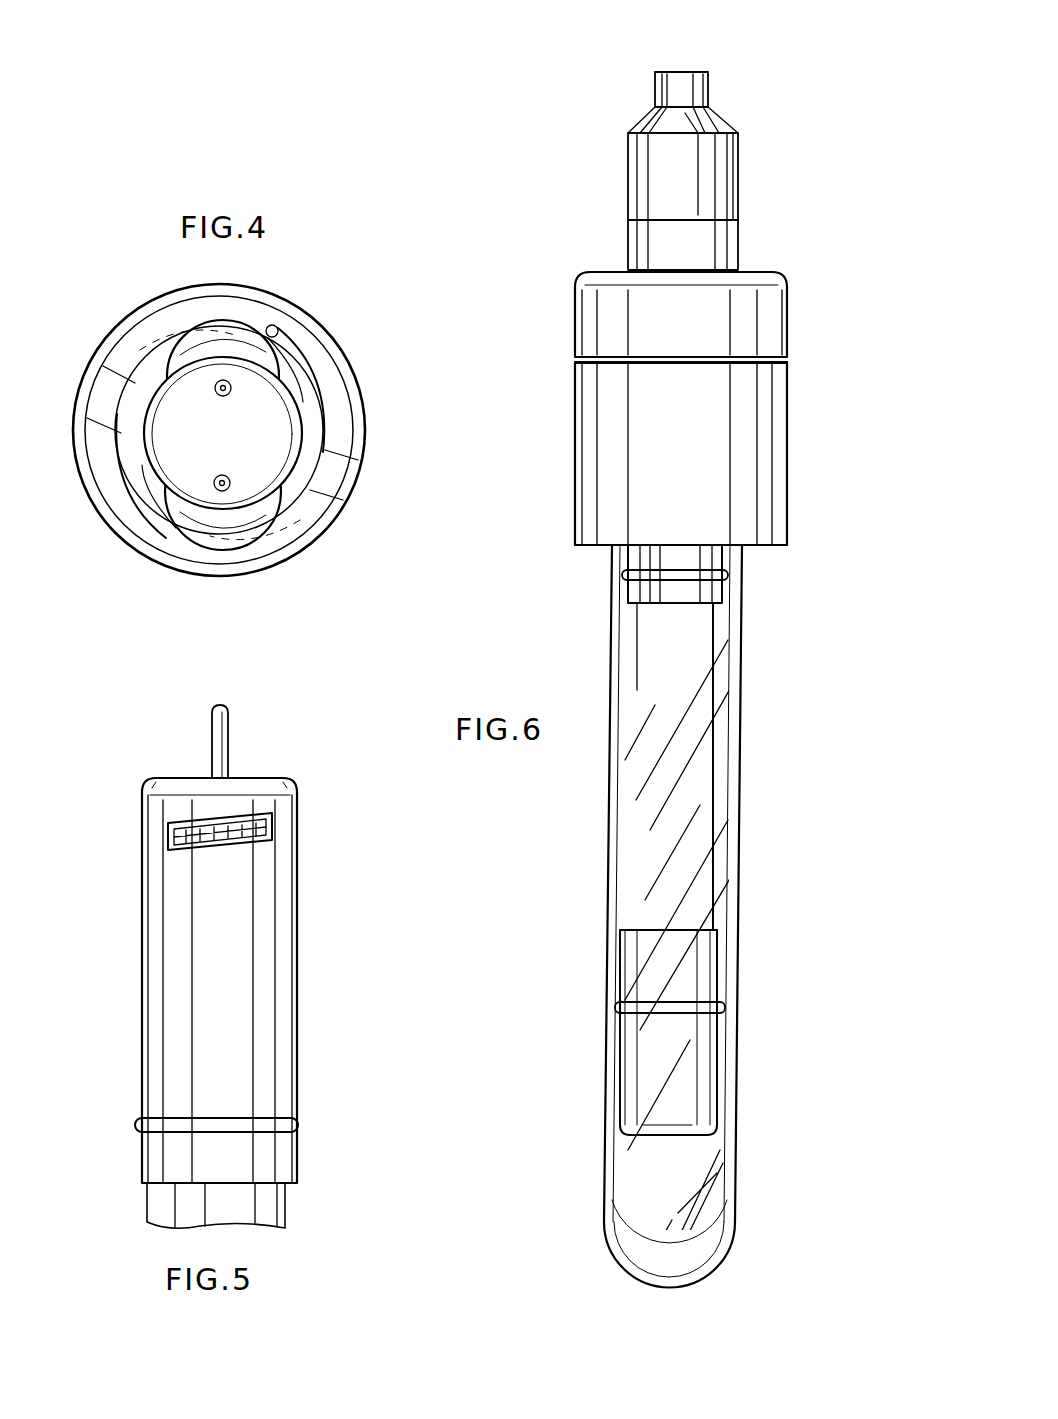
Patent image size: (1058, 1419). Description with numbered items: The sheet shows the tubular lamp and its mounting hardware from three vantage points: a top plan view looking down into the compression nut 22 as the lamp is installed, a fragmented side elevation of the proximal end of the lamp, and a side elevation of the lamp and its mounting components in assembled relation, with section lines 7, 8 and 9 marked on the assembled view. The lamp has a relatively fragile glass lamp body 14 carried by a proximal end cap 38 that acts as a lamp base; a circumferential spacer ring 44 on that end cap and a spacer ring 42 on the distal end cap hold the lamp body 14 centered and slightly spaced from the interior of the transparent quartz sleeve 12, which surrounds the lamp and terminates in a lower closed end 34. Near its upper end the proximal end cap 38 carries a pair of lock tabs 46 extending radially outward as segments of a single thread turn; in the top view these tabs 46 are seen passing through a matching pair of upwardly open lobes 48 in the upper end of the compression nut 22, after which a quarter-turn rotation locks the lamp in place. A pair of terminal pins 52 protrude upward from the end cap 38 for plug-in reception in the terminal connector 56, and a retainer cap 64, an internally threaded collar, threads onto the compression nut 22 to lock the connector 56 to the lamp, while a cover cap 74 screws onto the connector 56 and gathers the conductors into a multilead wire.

In FIG. 6, the transparent sleeve 12 is at (742, 720).
In FIG. 5, the glass lamp body 14 is at (291, 1212).
In FIG. 6, the glass lamp body 14 is at (653, 688).
In FIG. 4, the compression nut 22 is at (363, 402).
In FIG. 6, the compression nut 22 is at (768, 484).
In FIG. 6, the closed end 34 is at (718, 1258).
In FIG. 4, the proximal end cap 38 is at (153, 458).
In FIG. 5, the proximal end cap 38 is at (270, 963).
In FIG. 6, the proximal end cap 38 is at (640, 603).
In FIG. 6, the spacer ring 42 is at (622, 1015).
In FIG. 5, the spacer ring 44 is at (300, 1126).
In FIG. 6, the spacer ring 44 is at (628, 574).
In FIG. 4, the lock tabs 46 is at (190, 338).
In FIG. 5, the lock tabs 46 is at (254, 831).
In FIG. 4, the lobes 48 is at (264, 321).
In FIG. 4, the terminal pins 52 is at (231, 390).
In FIG. 5, the terminal pins 52 is at (231, 738).
In FIG. 6, the terminal connector 56 is at (723, 248).
In FIG. 6, the retainer cap 64 is at (768, 327).
In FIG. 6, the cover cap 74 is at (645, 187).
In FIG. 6, the section line 7- 7 is at (685, 0).
In FIG. 6, the section line 8- 8 is at (675, 867).
In FIG. 6, the section line 9- 9 is at (597, 950).